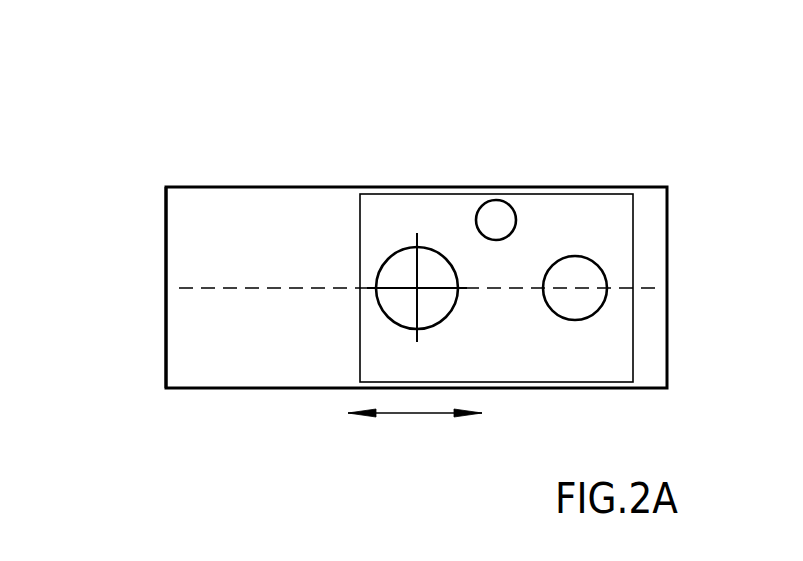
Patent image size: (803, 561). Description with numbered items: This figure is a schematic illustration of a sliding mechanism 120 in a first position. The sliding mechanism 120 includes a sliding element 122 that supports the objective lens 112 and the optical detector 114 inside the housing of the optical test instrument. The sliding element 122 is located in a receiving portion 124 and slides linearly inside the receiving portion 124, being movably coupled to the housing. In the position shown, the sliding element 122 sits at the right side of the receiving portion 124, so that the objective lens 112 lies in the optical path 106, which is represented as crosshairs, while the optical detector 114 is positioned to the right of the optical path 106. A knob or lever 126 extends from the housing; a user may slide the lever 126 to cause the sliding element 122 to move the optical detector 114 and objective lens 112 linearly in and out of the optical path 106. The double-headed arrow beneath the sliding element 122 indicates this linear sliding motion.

The sliding mechanism 120 is at (270, 73).
The receiving portion 124 is at (166, 215).
The sliding element 122 is at (633, 232).
The objective lens 112 is at (396, 252).
The optical path 106 is at (417, 288).
The lever 126 is at (515, 208).
The optical detector 114 is at (575, 256).